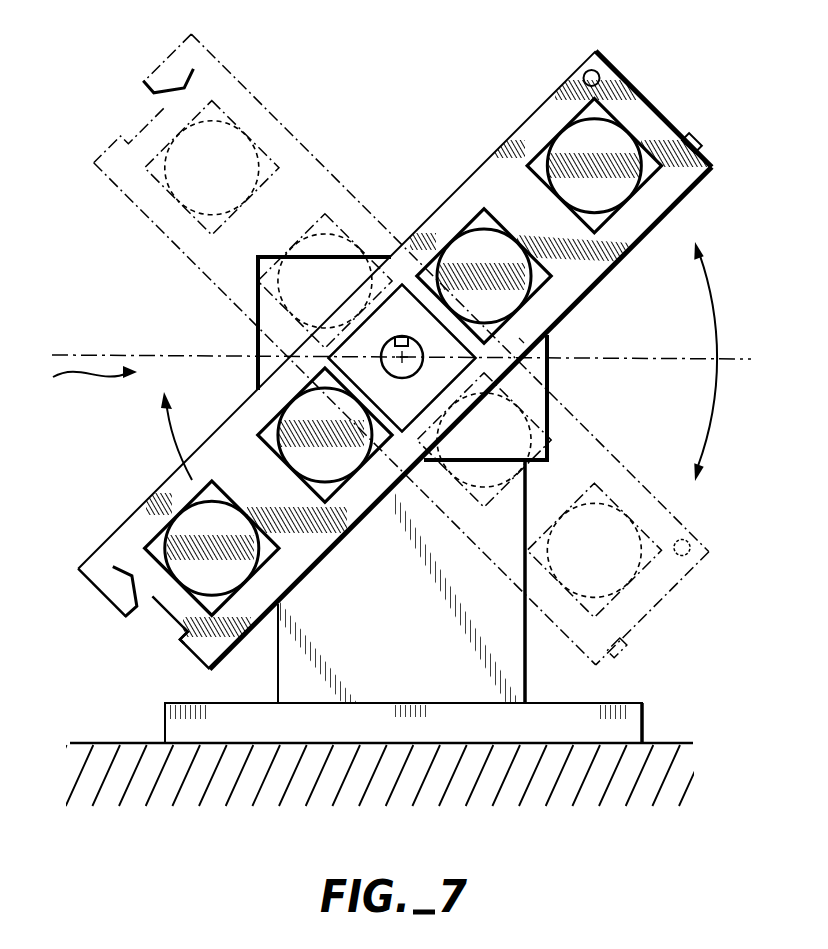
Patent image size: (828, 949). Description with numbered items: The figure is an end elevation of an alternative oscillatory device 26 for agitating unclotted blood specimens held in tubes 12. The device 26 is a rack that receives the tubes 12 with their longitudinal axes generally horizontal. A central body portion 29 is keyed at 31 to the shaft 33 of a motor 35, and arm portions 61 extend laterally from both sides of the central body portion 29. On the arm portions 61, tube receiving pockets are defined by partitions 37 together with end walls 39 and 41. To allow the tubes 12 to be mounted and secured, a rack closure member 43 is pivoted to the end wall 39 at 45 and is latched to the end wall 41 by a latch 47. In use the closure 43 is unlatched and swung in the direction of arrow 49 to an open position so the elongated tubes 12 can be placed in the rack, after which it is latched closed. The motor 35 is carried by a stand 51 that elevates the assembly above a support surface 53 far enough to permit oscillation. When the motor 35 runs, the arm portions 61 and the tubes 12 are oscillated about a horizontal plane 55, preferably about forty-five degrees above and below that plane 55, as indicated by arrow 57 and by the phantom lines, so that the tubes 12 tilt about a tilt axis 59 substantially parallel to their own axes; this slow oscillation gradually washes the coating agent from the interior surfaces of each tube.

The tubes 12 is at (227, 112).
The oscillatory device 26 is at (74, 374).
The central body portion 29 is at (258, 328).
The key 31 is at (401, 334).
The shaft 33 is at (258, 367).
The motor 35 is at (547, 367).
The partitions 37 is at (517, 200).
The end wall 39 is at (641, 112).
The end wall 41 is at (152, 105).
The rack closure member 43 is at (531, 107).
The pivot 45 is at (580, 68).
The latch 47 is at (127, 599).
The arrow 49 is at (173, 432).
The stand 51 is at (527, 670).
The support surface 53 is at (138, 742).
The horizontal plane 55 is at (701, 358).
The arrow 57 is at (716, 317).
The tilt axis 59 is at (522, 340).
The arm portions 61 is at (677, 212).